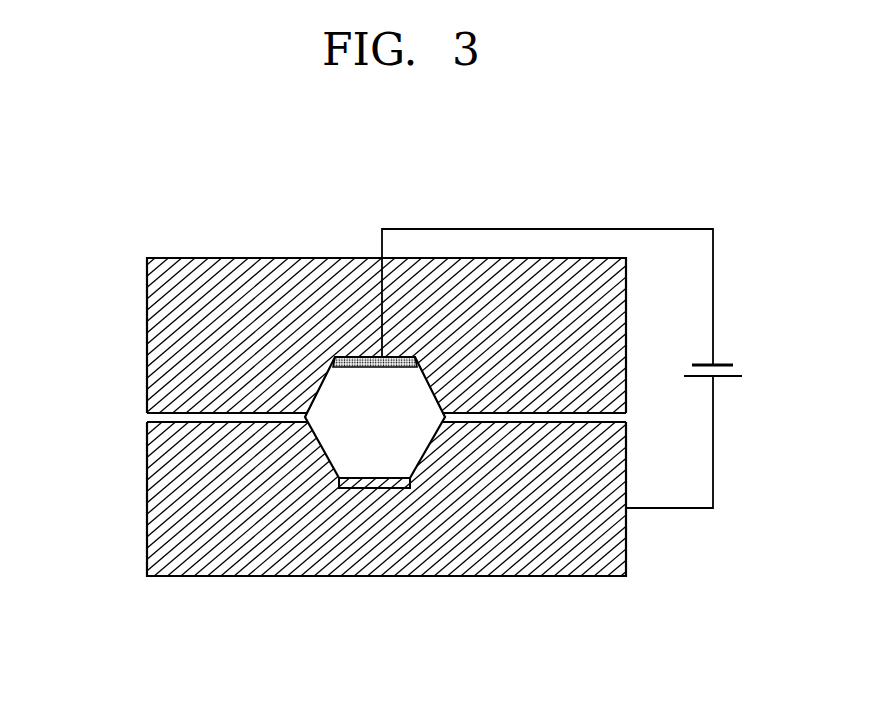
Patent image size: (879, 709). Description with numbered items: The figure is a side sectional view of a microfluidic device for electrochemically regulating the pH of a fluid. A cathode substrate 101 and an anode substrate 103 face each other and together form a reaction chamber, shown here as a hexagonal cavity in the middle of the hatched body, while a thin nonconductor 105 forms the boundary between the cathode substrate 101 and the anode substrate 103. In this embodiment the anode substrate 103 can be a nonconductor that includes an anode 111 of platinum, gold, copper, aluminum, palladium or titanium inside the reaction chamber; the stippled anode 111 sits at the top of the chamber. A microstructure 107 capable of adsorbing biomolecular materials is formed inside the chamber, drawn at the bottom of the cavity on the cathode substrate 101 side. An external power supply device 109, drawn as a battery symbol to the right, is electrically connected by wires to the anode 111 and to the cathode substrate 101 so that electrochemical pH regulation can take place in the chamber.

The cathode substrate 101 is at (157, 493).
The anode substrate 103 is at (157, 333).
The nonconductor 105 is at (160, 413).
The microstructure 107 is at (391, 483).
The external power supply device 109 is at (728, 378).
The anode 111 is at (362, 357).